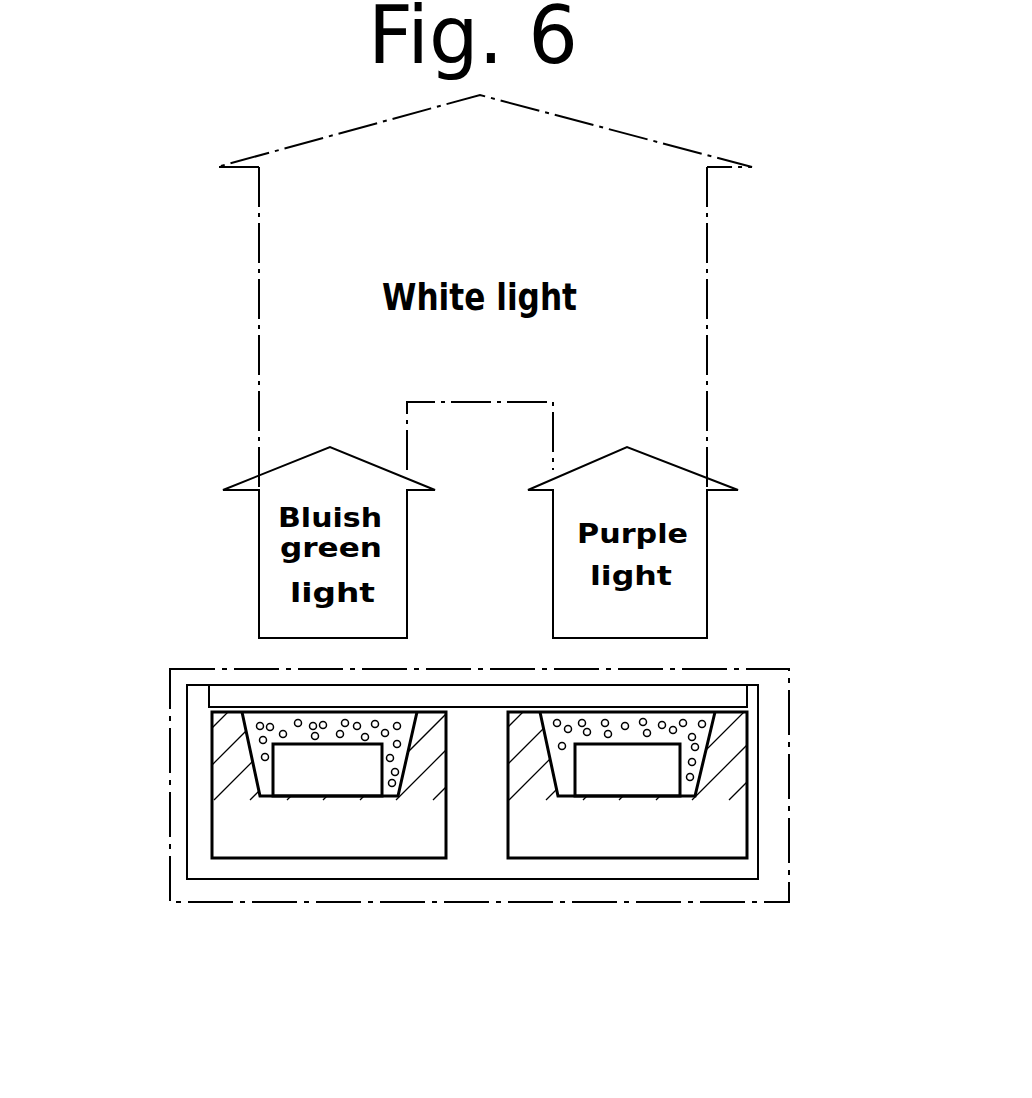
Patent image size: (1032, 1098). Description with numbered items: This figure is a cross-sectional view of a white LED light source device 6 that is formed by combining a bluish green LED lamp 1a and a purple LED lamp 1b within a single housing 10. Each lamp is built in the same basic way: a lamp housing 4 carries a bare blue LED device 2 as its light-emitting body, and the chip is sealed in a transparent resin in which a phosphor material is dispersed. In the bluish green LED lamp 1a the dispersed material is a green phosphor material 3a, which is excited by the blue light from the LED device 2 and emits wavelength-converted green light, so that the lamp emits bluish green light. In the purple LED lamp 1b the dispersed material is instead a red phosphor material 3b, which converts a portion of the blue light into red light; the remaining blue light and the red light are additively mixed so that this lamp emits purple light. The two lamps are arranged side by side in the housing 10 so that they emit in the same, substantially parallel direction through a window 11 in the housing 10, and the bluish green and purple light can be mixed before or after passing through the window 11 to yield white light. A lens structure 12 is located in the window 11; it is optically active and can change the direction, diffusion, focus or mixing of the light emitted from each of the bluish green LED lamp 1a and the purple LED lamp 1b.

The bluish green LED lamp 1a is at (203, 784).
The purple LED lamp 1b is at (755, 807).
The LED device 2 is at (322, 782).
The green phosphor material 3a is at (260, 723).
The red phosphor material 3b is at (700, 723).
The lamp housing 4 is at (536, 746).
The white LED light source device 6 is at (790, 730).
The housing 10 is at (723, 880).
The window 11 is at (747, 685).
The lens structure 12 is at (438, 685).